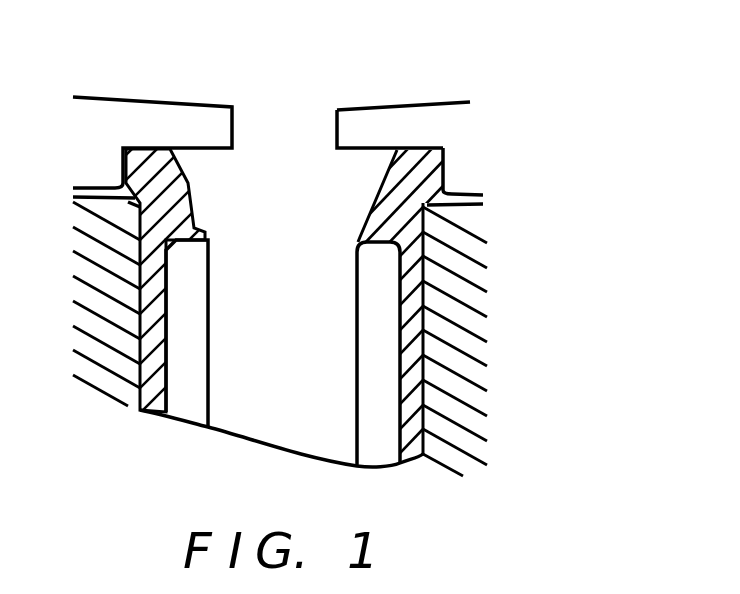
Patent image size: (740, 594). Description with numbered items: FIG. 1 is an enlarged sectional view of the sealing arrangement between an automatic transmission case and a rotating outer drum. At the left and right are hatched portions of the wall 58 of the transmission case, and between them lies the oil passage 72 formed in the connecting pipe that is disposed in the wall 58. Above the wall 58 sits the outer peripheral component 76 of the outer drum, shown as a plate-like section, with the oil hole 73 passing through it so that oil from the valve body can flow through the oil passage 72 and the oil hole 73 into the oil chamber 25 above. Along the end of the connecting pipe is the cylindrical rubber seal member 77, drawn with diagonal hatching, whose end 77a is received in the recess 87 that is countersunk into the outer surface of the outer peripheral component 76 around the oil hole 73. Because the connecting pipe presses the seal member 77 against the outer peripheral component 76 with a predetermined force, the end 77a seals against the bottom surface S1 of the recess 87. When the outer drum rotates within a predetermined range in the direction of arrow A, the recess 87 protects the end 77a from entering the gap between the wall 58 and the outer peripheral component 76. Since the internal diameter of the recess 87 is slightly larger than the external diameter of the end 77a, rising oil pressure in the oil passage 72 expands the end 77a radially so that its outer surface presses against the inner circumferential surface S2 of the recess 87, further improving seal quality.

The oil chamber 25 is at (260, 72).
The wall 58 is at (474, 320).
The oil passage 72 is at (258, 350).
The oil hole 73 is at (305, 113).
The outer peripheral component 76 is at (446, 120).
The seal member 77 is at (416, 310).
The end of the seal member 77a is at (430, 167).
The recess 87 is at (136, 150).
The bottom surface of the recess S1 is at (221, 148).
The inner circumferential surface of the recess S2 is at (186, 182).
The arrow A is at (133, 72).